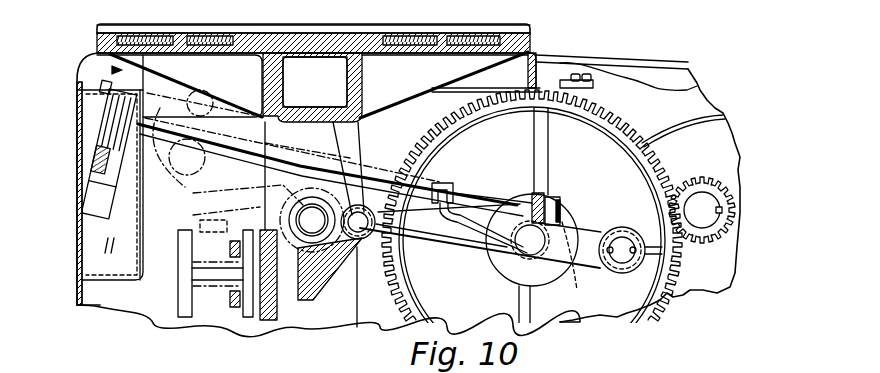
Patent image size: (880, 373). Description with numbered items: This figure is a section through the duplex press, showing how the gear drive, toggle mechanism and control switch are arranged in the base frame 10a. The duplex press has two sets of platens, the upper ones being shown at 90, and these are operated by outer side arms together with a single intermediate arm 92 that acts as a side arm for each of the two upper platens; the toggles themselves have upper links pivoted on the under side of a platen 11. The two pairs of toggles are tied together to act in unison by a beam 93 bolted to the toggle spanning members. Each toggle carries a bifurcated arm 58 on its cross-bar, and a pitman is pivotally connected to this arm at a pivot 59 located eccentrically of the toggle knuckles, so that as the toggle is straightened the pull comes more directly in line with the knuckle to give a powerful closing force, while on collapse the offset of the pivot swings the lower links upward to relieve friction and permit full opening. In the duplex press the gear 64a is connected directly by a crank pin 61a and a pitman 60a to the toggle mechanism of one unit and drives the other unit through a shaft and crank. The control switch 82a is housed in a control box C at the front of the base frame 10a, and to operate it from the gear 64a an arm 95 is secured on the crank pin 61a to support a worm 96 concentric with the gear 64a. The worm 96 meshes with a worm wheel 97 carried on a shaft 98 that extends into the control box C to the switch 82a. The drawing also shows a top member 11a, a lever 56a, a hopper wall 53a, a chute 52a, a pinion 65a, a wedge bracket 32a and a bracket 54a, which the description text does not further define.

The base frame 10a is at (110, 51).
The top plate 11a is at (534, 52).
The platen 11 is at (94, 240).
The upper platen 90 is at (530, 32).
The control switch 82a is at (100, 144).
The control box C is at (97, 262).
The lever 56a is at (248, 189).
The hopper wall 53a is at (396, 113).
The chute 52a is at (357, 128).
The shaft 98 is at (378, 175).
The worm wheel 97 is at (547, 194).
The gear 64a is at (637, 110).
The pinion 65a is at (728, 186).
The pivot 59 is at (366, 240).
The bifurcated arm 58 is at (342, 283).
The wedge bracket 32a is at (312, 327).
The intermediate arm 92 is at (368, 328).
The pitman 60a is at (425, 243).
The worm 96 is at (490, 258).
The arm 95 is at (576, 258).
The crank pin 61a is at (625, 262).
The beam 93 is at (177, 313).
The bracket 54a is at (282, 313).